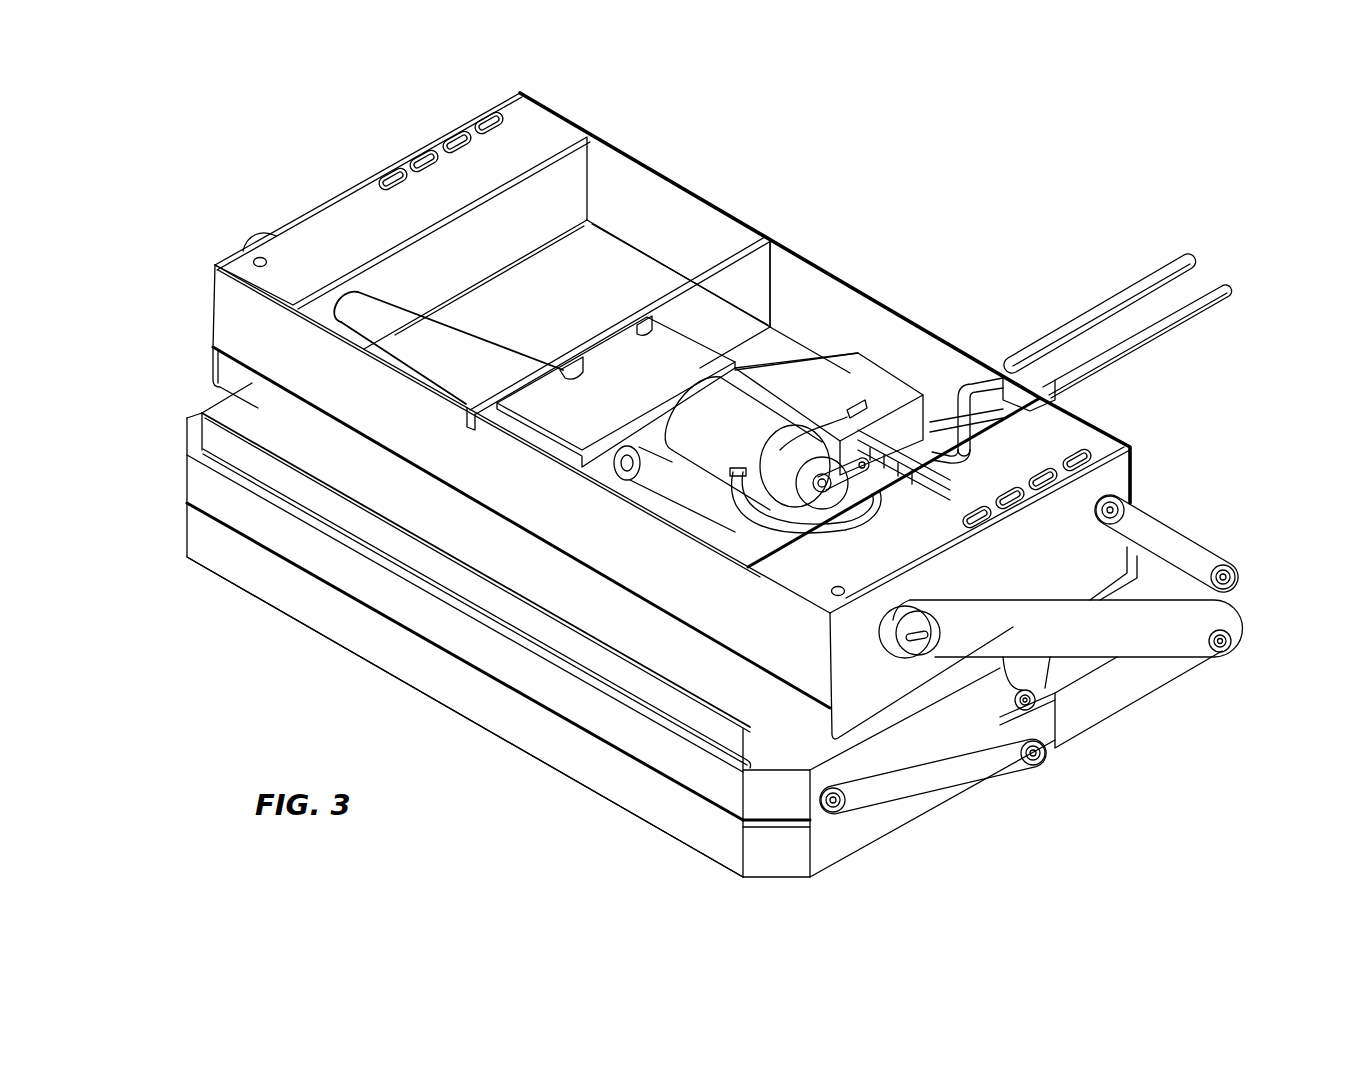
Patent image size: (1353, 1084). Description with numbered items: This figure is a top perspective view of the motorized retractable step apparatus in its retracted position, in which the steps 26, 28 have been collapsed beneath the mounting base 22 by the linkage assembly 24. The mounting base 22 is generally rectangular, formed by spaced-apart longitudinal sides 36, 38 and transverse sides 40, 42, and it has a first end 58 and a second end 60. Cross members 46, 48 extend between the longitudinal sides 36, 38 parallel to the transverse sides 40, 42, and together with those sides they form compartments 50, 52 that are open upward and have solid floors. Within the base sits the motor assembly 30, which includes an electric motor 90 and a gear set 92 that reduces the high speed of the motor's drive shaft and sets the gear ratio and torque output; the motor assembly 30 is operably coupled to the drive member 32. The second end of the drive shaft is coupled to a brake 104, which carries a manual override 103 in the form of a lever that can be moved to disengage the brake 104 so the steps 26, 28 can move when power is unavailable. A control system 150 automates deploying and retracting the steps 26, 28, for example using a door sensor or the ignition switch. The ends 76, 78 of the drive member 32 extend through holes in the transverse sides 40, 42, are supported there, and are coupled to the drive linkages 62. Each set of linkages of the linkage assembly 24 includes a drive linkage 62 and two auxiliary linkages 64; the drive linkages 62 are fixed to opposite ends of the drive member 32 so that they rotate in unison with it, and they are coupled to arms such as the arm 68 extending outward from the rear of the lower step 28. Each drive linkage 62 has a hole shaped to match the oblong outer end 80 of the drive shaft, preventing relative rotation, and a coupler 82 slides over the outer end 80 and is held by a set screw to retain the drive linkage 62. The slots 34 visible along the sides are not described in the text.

The mounting base 22 is at (548, 131).
The linkage assembly 24 is at (1251, 626).
The first or upper step 26 is at (765, 817).
The second or lower step 28 is at (787, 872).
The motor assembly 30 is at (749, 378).
The drive member 32 is at (433, 341).
The slots 34 is at (488, 118).
The longitudinal side 36 is at (797, 670).
The longitudinal side 38 is at (715, 226).
The transverse side 40 is at (1125, 470).
The transverse side 42 is at (228, 372).
The cross member 46 is at (767, 272).
The cross member 48 is at (527, 227).
The compartment 50 is at (821, 296).
The compartment 52 is at (652, 197).
The first end 58 is at (1168, 479).
The second end 60 is at (328, 146).
The drive linkage 62 is at (1038, 606).
The auxiliary linkage 64 is at (1180, 533).
The arm 68 is at (1143, 692).
The end of the drive member 76 is at (880, 659).
The end of the drive member 78 is at (261, 220).
The outer end 80 is at (933, 643).
The coupler 82 is at (888, 628).
The electric motor 90 is at (731, 454).
The gear set 92 is at (685, 352).
The manual override 103 is at (866, 473).
The brake 104 is at (793, 500).
The control system 150 is at (869, 426).